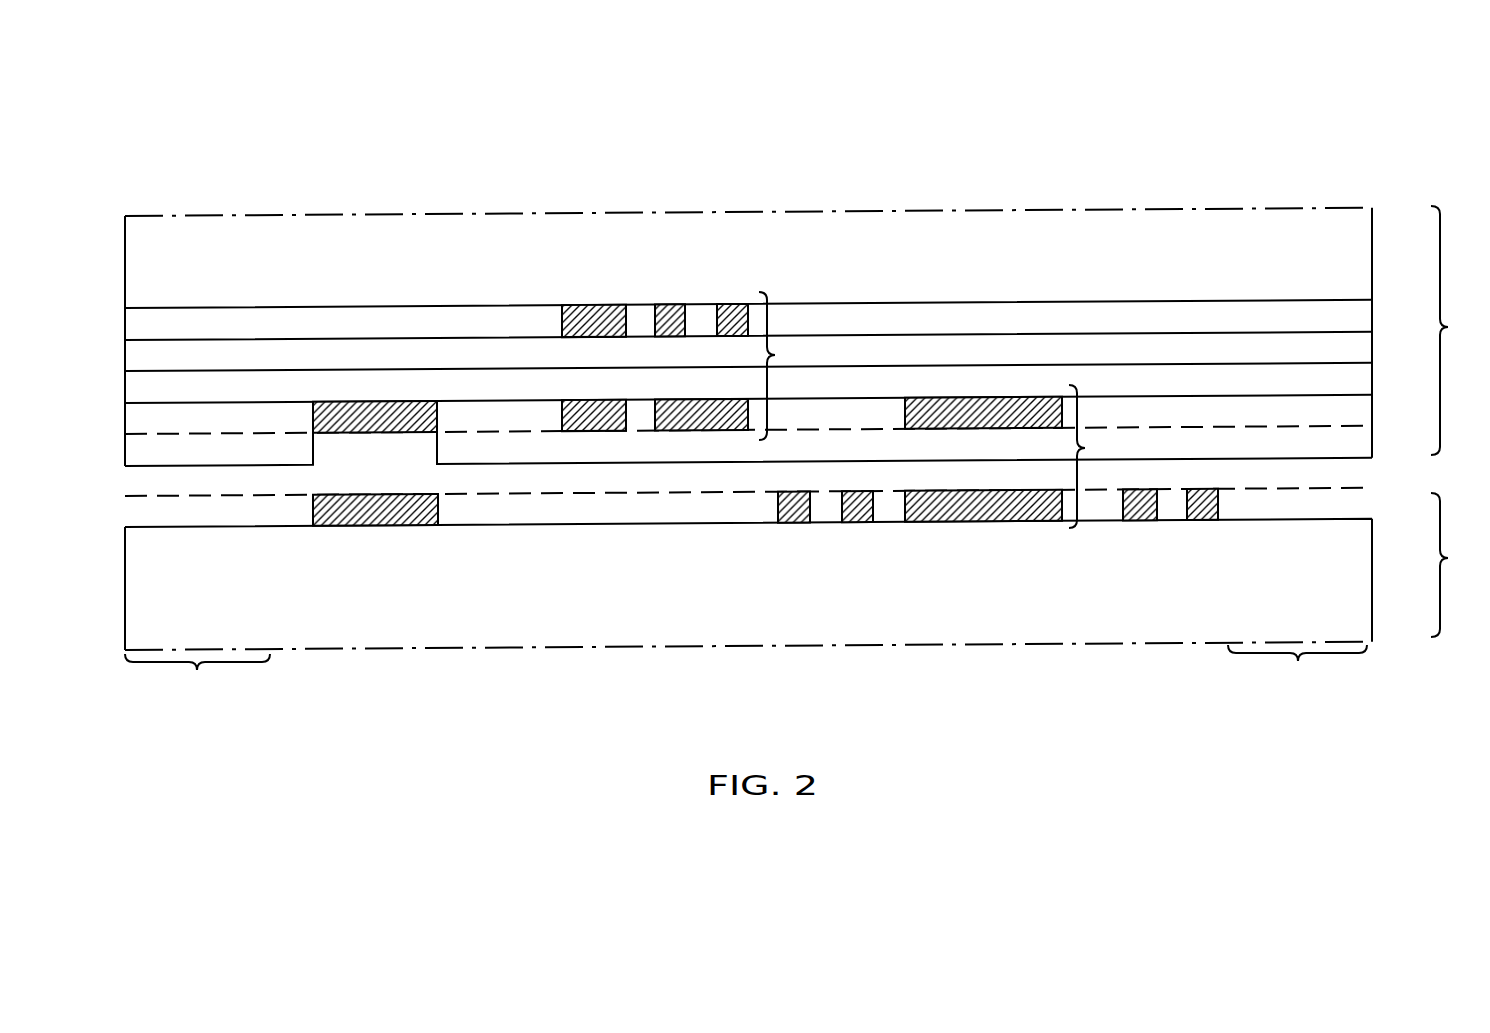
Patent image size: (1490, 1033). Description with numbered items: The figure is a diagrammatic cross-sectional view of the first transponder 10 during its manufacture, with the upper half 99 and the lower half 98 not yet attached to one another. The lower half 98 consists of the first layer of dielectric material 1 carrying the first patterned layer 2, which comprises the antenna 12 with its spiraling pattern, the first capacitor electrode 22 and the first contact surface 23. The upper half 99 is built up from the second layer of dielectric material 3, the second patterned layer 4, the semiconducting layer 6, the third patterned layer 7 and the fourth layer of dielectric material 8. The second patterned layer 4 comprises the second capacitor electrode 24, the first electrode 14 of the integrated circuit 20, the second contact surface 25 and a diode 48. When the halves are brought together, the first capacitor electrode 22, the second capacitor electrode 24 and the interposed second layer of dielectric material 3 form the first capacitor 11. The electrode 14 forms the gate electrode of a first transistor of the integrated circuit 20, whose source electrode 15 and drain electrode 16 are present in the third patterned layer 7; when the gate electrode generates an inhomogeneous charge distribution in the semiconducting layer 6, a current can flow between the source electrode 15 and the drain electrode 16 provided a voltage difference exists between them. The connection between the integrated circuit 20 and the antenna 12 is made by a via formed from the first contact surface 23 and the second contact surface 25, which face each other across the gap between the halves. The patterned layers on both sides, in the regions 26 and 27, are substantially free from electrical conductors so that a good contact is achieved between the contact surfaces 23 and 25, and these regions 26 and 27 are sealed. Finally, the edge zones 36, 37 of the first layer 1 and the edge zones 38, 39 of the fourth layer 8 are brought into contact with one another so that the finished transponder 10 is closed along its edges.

The transponder 10 is at (1288, 118).
The first layer of dielectric material 1 is at (1353, 585).
The first patterned layer 2 is at (1355, 495).
The second layer of dielectric material 3 is at (1358, 444).
The second patterned layer 4 is at (1362, 409).
The semiconducting layer 6 is at (1362, 350).
The third patterned layer 7 is at (1362, 312).
The fourth layer of dielectric material 8 is at (1362, 264).
The first capacitor 11 is at (1089, 456).
The antenna 12 is at (797, 510).
The first electrode of the integrated circuit 14 is at (720, 432).
The source electrode 15 is at (675, 308).
The drain electrode 16 is at (738, 308).
The integrated circuit 20 is at (778, 366).
The first capacitor electrode 22 is at (972, 520).
The first contact surface 23 is at (371, 515).
The second capacitor electrode 24 is at (990, 400).
The second contact surface 25 is at (363, 403).
The region free from electrical conductors 26 is at (493, 530).
The region free from electrical conductors 27 is at (488, 450).
The edge zone of the first layer 36 is at (1298, 661).
The edge zone of the first layer 37 is at (197, 670).
The edge zone of the fourth layer 38 is at (1312, 432).
The edge zone of the fourth layer 39 is at (163, 424).
The diode 48 is at (590, 308).
The lower half 98 is at (1452, 565).
The upper half 99 is at (1452, 330).